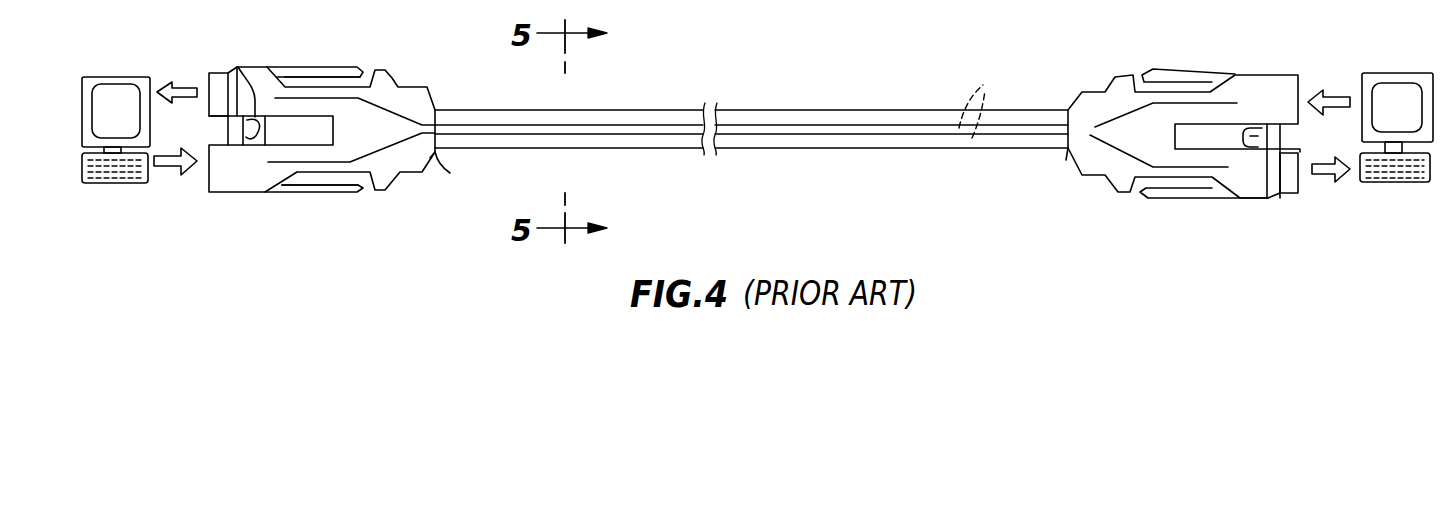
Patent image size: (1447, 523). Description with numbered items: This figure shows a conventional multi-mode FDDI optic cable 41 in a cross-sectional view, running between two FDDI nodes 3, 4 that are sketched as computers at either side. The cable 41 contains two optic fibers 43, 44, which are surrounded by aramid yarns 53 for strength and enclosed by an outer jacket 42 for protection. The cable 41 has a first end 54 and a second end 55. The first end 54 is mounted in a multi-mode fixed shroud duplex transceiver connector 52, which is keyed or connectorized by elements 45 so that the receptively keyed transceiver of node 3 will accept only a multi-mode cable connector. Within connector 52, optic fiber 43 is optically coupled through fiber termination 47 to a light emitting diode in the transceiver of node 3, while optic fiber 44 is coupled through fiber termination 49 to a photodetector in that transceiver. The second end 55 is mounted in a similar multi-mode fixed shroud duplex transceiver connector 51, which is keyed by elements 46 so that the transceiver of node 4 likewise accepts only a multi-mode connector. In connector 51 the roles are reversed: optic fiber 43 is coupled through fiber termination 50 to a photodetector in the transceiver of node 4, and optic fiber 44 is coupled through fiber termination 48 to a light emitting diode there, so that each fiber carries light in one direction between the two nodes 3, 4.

The FDDI node 3 is at (1396, 127).
The FDDI node 4 is at (116, 130).
The multi-mode cable 41 is at (751, 128).
The outer jacket 42 is at (640, 148).
The optic fiber 43 is at (800, 123).
The optic fiber 44 is at (793, 134).
The keying elements 45 is at (1172, 70).
The keying elements 46 is at (238, 67).
The fiber termination 47 is at (1260, 76).
The fiber termination 48 is at (263, 183).
The fiber termination 49 is at (1253, 190).
The fiber termination 50 is at (262, 72).
The multi-mode fixed shroud duplex transceiver connector 51 is at (333, 139).
The multi-mode fixed shroud duplex transceiver connector 52 is at (1188, 142).
The aramid yarns 53 is at (986, 105).
The first end 54 is at (1068, 152).
The second end 55 is at (437, 152).